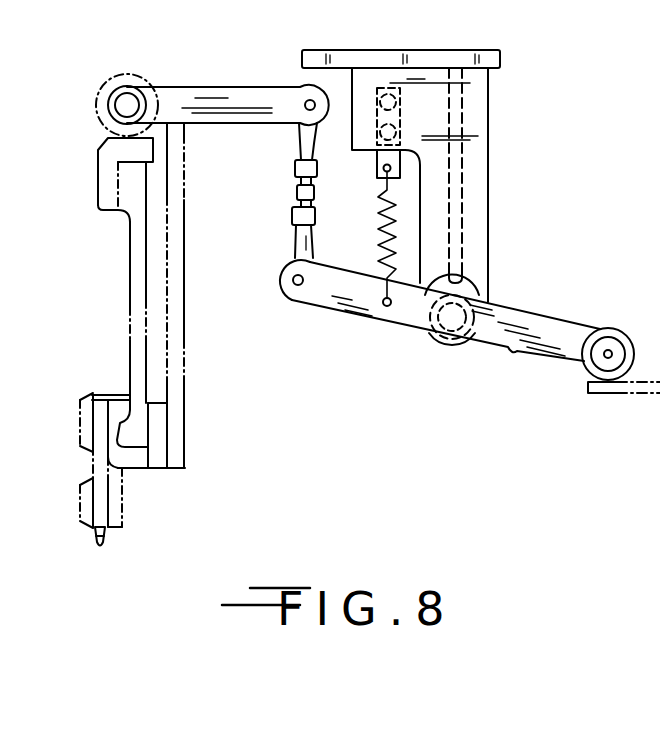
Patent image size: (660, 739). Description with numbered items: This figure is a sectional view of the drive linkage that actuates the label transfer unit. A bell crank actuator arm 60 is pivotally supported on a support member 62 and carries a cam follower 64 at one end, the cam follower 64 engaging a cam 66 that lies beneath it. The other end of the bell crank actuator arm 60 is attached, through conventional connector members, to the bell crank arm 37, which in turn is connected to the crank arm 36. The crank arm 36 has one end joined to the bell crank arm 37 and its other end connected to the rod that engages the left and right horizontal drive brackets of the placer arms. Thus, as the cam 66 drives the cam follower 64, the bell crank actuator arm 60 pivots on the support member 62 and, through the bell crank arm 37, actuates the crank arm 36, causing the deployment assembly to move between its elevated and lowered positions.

The crank arm 36 is at (208, 103).
The bell crank arm 37 is at (298, 140).
The bell crank actuator arm 60 is at (509, 352).
The support member 62 is at (477, 172).
The cam follower 64 is at (614, 336).
The cam 66 is at (608, 395).